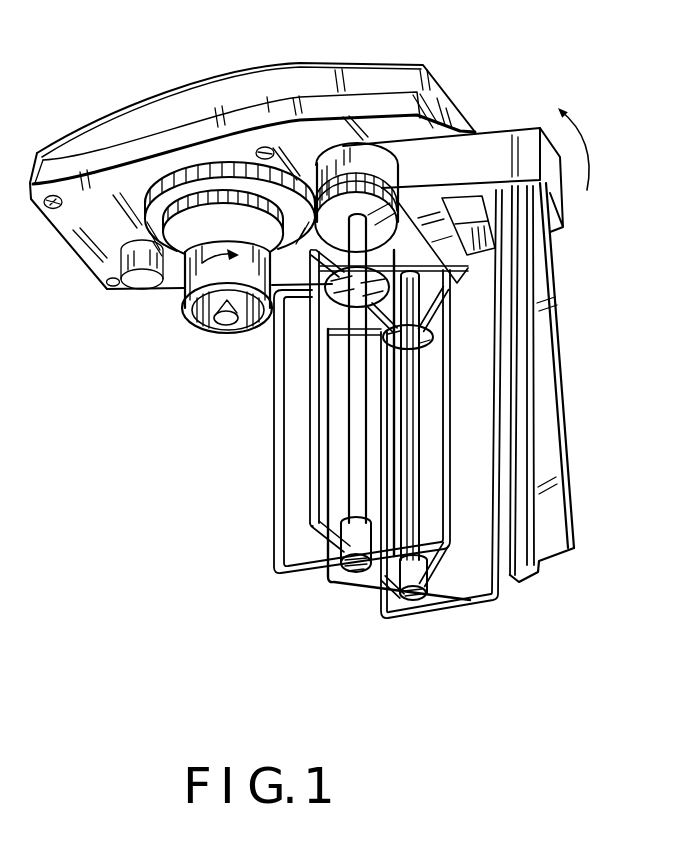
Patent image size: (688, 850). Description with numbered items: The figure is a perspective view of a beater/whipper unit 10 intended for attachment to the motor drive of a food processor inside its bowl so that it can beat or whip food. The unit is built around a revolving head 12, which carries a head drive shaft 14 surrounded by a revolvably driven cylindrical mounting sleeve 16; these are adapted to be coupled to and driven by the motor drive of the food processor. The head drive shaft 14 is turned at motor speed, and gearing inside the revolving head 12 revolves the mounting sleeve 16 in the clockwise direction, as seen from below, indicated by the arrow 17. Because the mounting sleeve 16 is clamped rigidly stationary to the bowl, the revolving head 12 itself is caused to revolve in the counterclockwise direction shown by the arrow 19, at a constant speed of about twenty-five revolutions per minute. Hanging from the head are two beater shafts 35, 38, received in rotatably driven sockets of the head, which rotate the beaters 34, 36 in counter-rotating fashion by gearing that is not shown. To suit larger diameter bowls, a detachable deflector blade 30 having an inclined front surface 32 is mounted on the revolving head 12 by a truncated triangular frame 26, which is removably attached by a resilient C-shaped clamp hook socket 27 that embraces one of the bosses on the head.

The beater/whipper unit 10 is at (508, 54).
The revolving head 12 is at (231, 82).
The head drive shaft 14 is at (226, 326).
The mounting sleeve 16 is at (183, 317).
The arrow 17 is at (183, 290).
The arrow 19 is at (587, 148).
The truncated triangular frame 26 is at (510, 137).
The C-shaped clamp hook socket 27 is at (320, 150).
The deflector blade 30 is at (567, 427).
The inclined front surface 32 is at (540, 387).
The beater 34 is at (273, 516).
The beater shaft 35 is at (353, 440).
The beater 36 is at (498, 588).
The beater shaft 38 is at (412, 460).